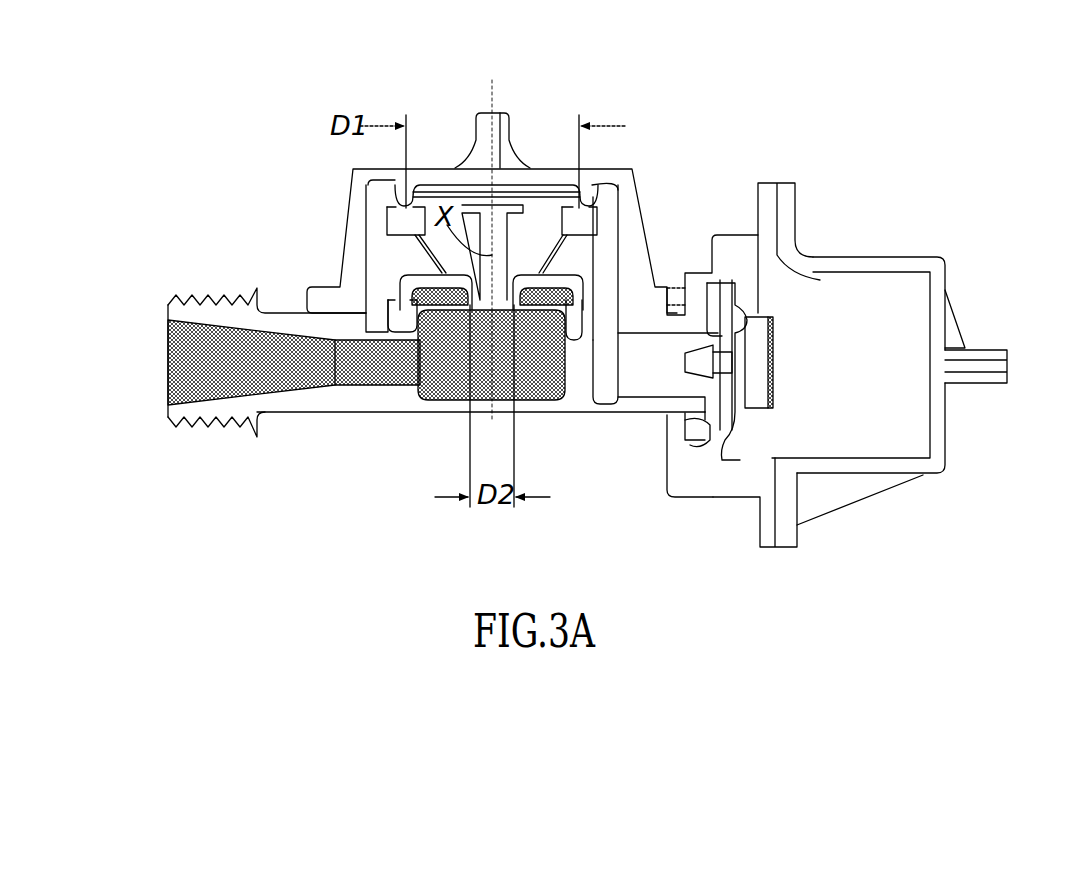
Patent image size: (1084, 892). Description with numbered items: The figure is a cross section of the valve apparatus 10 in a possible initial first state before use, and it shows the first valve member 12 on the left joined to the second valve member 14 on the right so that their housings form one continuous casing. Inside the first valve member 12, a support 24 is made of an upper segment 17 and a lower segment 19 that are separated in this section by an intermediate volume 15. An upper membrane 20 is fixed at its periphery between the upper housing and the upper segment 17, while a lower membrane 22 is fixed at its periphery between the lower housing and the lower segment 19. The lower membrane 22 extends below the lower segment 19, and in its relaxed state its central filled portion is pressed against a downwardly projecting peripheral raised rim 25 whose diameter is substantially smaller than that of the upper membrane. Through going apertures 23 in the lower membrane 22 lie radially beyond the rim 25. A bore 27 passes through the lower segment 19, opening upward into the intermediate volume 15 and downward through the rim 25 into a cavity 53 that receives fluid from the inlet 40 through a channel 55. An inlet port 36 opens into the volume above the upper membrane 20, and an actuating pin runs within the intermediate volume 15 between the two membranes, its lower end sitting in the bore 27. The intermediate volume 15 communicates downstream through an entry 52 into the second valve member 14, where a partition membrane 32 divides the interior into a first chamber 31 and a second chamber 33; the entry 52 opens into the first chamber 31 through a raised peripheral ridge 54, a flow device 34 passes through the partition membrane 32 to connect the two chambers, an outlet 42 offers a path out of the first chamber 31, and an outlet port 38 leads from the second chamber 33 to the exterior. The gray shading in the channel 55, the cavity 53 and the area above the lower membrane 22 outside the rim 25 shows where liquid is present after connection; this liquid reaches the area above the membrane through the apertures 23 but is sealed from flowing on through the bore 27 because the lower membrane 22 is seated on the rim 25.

The valve apparatus 10 is at (952, 118).
The first valve member 12 is at (628, 160).
The second valve member 14 is at (950, 235).
The intermediate volume 15 is at (378, 232).
The upper segment 17 is at (357, 217).
The lower segment 19 is at (393, 258).
The upper membrane 20 is at (452, 186).
The lower membrane 22 is at (555, 392).
The through going apertures 23 is at (432, 322).
The support 24 is at (392, 222).
The peripheral raised rim 25 is at (467, 375).
The bore 27 is at (497, 290).
The first chamber 31 is at (730, 480).
The partition membrane 32 is at (748, 307).
The second chamber 33 is at (905, 435).
The flow device 34 is at (773, 393).
The inlet port 36 is at (450, 168).
The outlet port 38 is at (1007, 356).
The inlet 40 is at (168, 380).
The outlet 42 is at (683, 273).
The entry 52 is at (645, 378).
The cavity 53 is at (540, 325).
The raised peripheral ridge 54 is at (720, 440).
The channel 55 is at (318, 375).